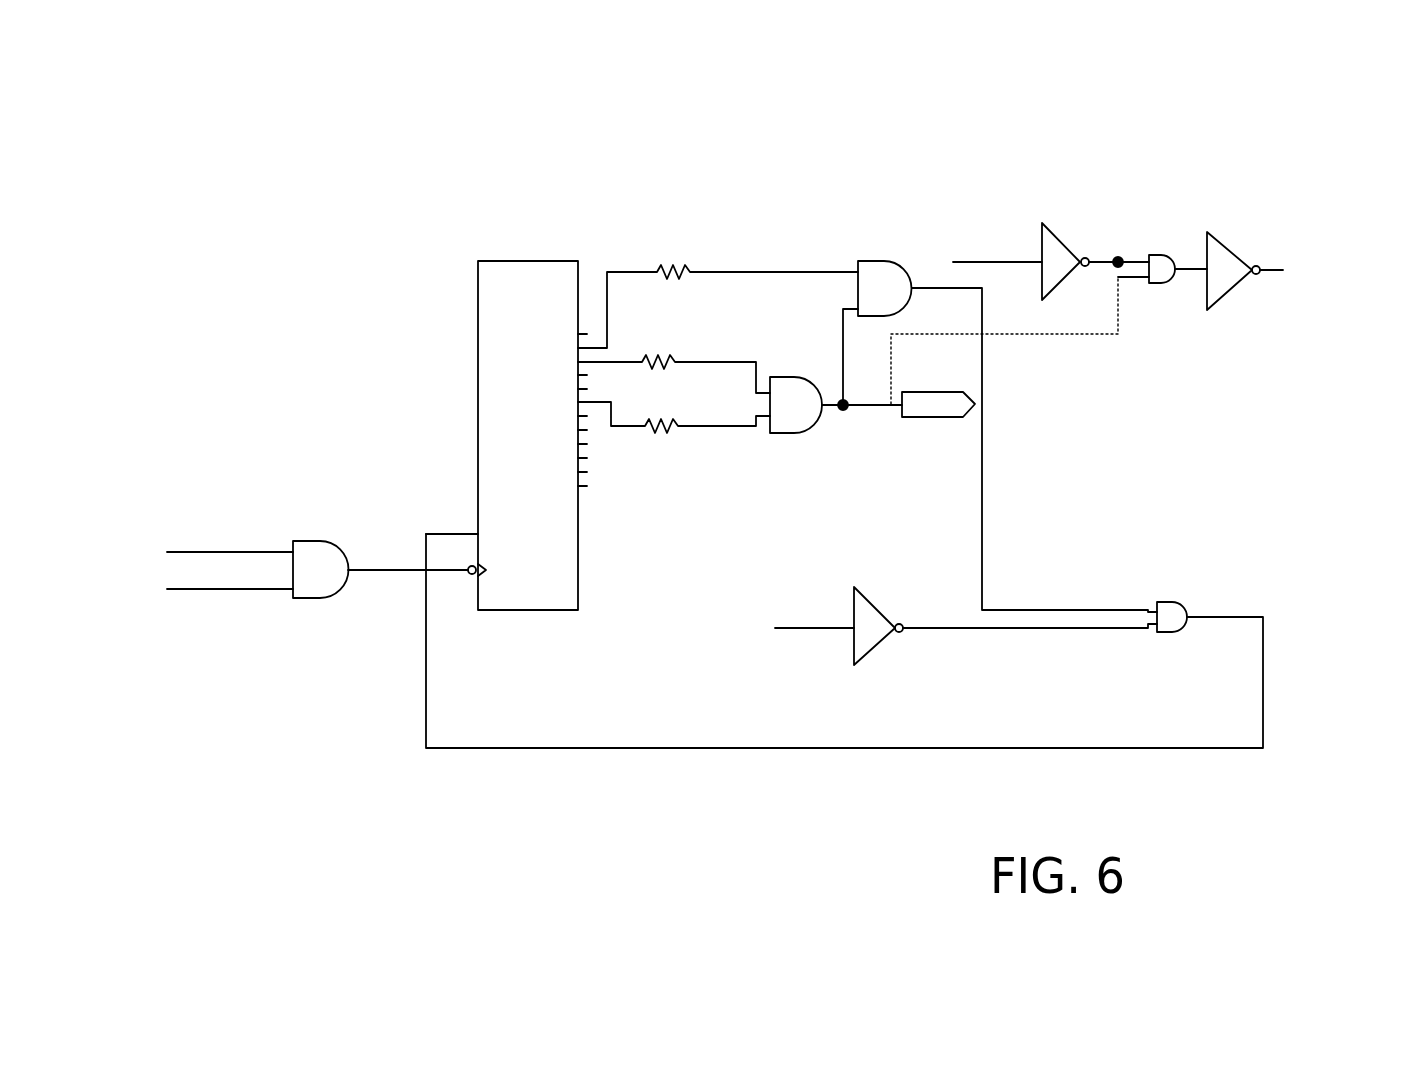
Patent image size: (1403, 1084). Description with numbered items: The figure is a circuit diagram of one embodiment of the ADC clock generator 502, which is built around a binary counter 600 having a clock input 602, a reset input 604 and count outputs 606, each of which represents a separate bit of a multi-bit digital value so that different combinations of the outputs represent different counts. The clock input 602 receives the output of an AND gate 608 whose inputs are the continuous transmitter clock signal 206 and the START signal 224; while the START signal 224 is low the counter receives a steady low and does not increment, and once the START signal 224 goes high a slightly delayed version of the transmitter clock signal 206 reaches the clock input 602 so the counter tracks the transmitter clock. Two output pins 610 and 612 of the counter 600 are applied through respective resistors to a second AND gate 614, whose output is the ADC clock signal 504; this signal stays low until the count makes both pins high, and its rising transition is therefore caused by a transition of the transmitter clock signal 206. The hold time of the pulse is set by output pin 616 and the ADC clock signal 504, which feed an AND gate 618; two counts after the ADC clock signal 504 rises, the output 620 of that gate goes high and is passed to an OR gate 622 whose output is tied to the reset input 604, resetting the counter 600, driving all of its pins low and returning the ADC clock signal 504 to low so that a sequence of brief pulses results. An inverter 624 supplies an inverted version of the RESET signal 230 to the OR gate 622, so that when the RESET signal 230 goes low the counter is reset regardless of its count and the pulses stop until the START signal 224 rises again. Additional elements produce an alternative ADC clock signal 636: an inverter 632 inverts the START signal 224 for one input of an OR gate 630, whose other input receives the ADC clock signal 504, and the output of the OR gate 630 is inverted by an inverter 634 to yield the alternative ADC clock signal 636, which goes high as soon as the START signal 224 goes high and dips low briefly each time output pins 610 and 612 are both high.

The ADC clock generator 502 is at (729, 202).
The binary counter 600 is at (486, 261).
The clock input 602 is at (478, 576).
The reset input 604 is at (478, 532).
The count outputs 606 is at (587, 318).
The AND gate 608 is at (308, 600).
The START signal 224 is at (282, 552).
The transmitter clock signal 206 is at (225, 592).
The output pin 616 is at (648, 272).
The output pin 610 is at (634, 360).
The output pin 612 is at (596, 404).
The second AND gate 614 is at (800, 377).
The AND gate 618 is at (880, 261).
The ADC clock signal 504 is at (856, 407).
The output 620 is at (982, 318).
The inverter 632 is at (1058, 232).
The OR gate 630 is at (1160, 283).
The inverter 634 is at (1228, 248).
The alternative ADC clock signal 636 is at (1264, 276).
The RESET signal 230 is at (783, 632).
The inverter 624 is at (872, 648).
The OR gate 622 is at (1168, 634).